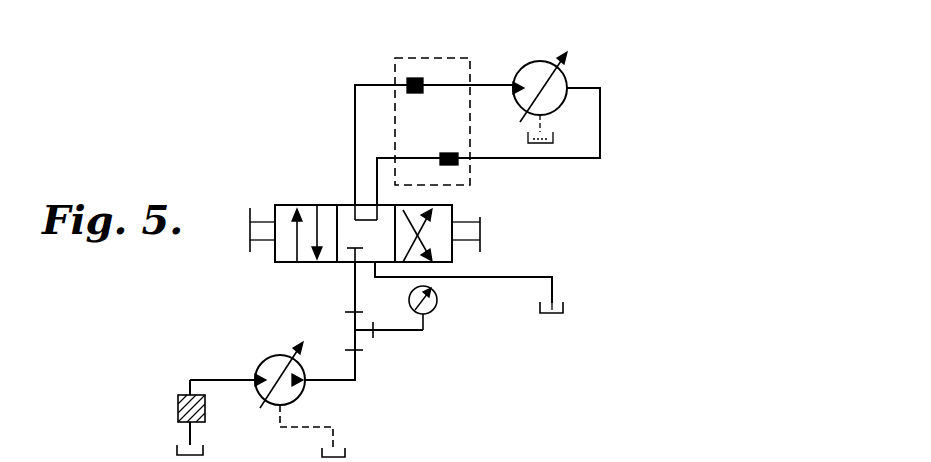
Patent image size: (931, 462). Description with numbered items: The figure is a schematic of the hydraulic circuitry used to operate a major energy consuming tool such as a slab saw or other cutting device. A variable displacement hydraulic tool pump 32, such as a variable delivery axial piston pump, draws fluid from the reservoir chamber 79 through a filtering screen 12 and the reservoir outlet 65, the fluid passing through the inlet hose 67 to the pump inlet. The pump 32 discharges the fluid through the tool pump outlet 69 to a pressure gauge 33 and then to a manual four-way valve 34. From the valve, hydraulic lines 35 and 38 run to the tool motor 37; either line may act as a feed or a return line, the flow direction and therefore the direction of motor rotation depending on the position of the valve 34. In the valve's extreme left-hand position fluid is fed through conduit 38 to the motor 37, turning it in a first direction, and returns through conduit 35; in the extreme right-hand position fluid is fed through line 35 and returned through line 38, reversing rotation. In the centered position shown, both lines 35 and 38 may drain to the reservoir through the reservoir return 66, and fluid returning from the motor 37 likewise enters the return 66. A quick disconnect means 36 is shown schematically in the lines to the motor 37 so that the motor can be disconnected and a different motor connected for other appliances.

The filtering screen 12 is at (178, 398).
The hydraulic tool pump 32 is at (283, 354).
The pressure gauge 33 is at (438, 302).
The manual four-way valve 34 is at (455, 210).
The hydraulic line 35 is at (355, 150).
The quick disconnect means 36 is at (395, 58).
The tool motor 37 is at (566, 76).
The hydraulic line 38 is at (377, 158).
The reservoir outlet 65 is at (190, 388).
The reservoir return 66 is at (565, 311).
The inlet hose 67 is at (253, 381).
The tool pump outlet 69 is at (338, 384).
The chamber 79 is at (175, 447).